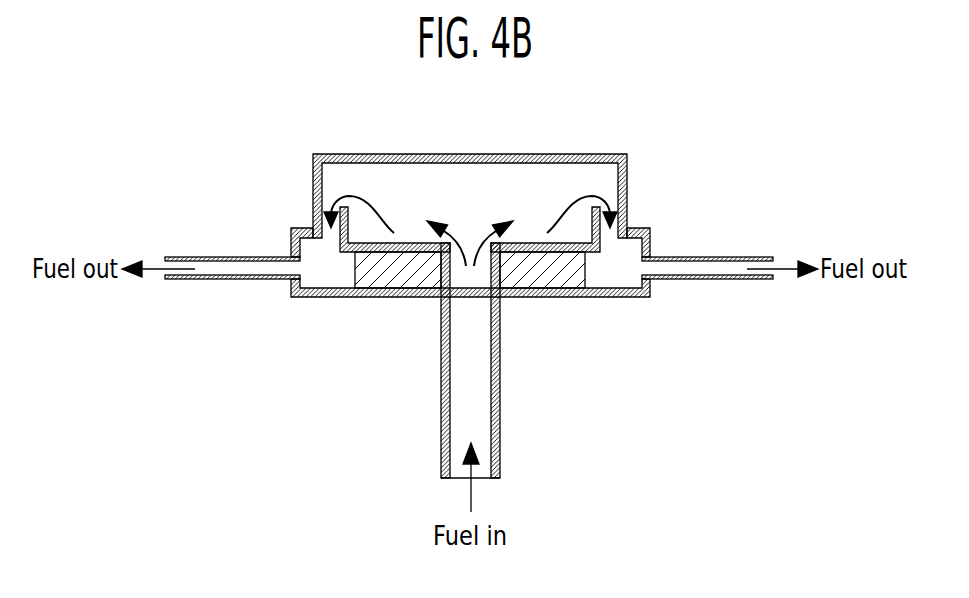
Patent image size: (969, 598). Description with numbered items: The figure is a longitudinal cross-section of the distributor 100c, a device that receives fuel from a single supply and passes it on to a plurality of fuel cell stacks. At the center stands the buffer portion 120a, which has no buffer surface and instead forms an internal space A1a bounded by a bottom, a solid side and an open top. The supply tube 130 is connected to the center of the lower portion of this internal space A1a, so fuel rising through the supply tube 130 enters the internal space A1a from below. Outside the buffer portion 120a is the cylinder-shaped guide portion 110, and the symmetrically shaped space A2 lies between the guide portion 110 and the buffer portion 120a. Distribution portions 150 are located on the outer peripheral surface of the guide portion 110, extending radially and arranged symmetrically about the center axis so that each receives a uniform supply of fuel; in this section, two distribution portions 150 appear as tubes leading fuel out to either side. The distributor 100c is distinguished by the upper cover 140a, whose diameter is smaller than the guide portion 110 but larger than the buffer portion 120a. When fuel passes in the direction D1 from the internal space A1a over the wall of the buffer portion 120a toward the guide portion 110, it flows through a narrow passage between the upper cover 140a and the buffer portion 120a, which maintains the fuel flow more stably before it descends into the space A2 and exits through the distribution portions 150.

The distributor 100c is at (192, 87).
The guide portion 110 is at (652, 283).
The buffer portion 120a is at (600, 241).
The supply tube 130 is at (498, 423).
The upper cover 140a is at (470, 153).
The distribution portion 150 is at (205, 257).
The internal space A1a is at (547, 221).
The space A2 is at (313, 273).
The direction D1 is at (470, 198).